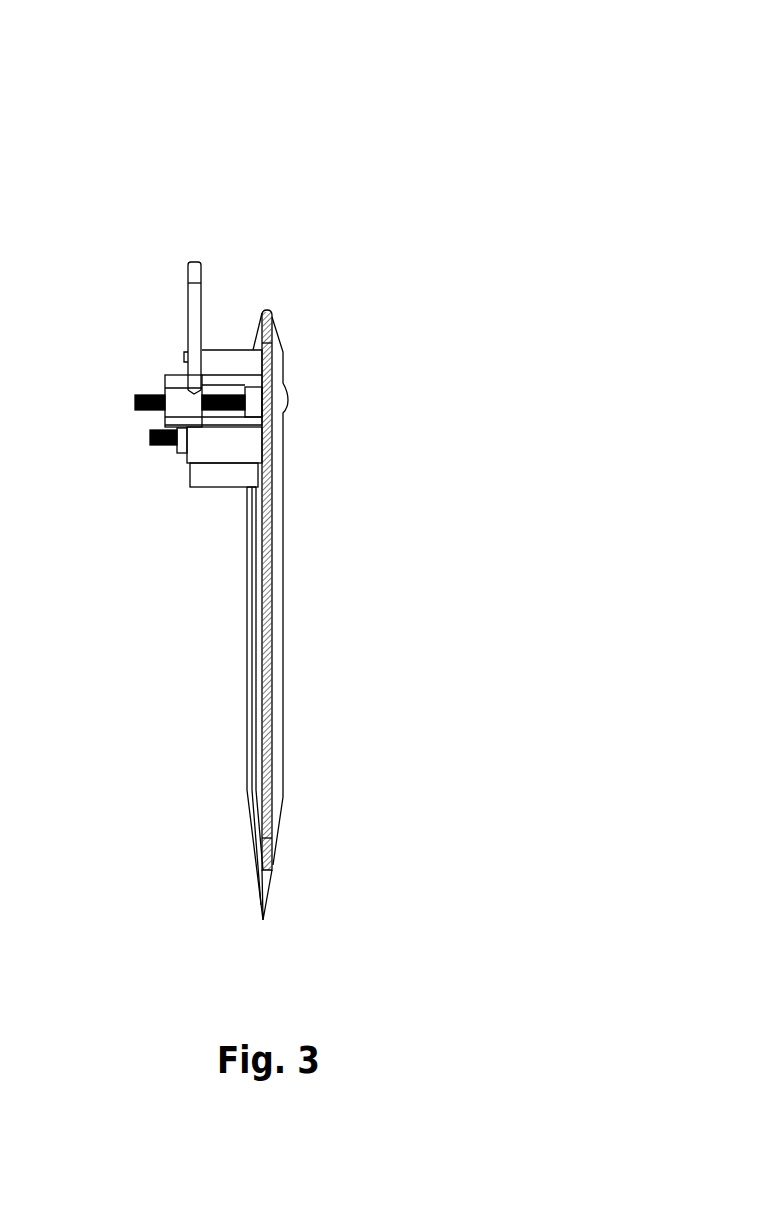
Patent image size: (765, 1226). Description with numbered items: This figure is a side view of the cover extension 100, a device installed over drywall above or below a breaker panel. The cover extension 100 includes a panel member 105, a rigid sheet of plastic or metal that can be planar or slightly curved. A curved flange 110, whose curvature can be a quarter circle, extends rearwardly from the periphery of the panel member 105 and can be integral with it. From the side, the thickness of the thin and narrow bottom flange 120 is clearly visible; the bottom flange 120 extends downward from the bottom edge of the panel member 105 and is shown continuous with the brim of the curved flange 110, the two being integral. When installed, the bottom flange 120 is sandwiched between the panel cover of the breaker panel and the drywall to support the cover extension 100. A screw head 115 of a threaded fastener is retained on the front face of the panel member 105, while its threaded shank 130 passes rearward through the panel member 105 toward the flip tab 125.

The cover extension 100 is at (307, 163).
The panel member 105 is at (283, 565).
The curved flange 110 is at (260, 780).
The screw head 115 is at (290, 408).
The bottom flange 120 is at (203, 487).
The flip tab 125 is at (187, 283).
The threaded shank 130 is at (147, 437).